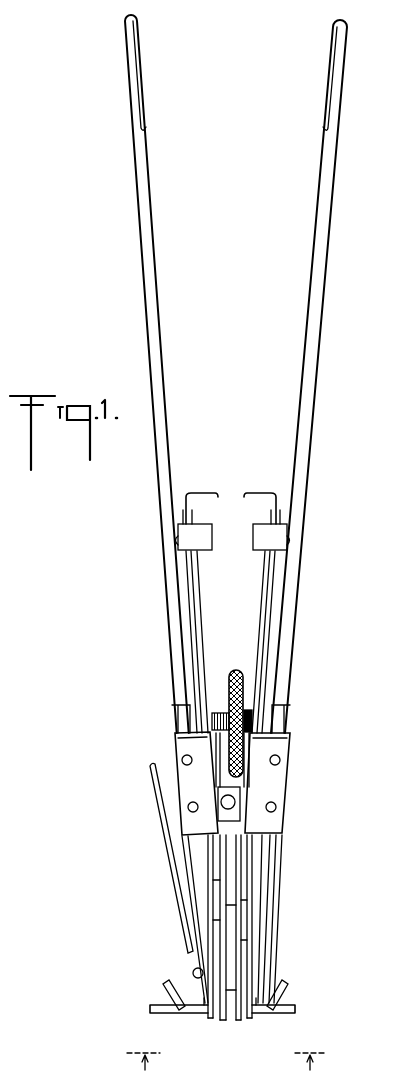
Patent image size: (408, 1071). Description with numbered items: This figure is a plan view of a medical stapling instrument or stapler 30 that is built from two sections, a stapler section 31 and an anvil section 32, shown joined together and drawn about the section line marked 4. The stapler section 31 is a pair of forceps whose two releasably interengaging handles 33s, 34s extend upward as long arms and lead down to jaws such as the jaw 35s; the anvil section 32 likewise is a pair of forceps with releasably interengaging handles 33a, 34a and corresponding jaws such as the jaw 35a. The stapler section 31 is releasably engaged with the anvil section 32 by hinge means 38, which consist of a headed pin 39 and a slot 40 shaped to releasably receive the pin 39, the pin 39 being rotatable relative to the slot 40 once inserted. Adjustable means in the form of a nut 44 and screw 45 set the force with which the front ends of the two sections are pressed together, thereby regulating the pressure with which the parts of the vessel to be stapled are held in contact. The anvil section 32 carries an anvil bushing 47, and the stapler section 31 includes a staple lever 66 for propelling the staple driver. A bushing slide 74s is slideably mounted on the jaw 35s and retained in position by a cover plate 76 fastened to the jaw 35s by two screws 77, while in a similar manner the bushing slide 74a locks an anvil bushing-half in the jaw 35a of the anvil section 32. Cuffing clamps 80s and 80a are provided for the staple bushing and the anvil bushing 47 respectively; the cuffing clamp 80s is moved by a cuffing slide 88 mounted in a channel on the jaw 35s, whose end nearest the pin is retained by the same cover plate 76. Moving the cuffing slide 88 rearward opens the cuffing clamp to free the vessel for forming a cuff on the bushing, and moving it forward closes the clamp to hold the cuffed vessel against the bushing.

The medical stapling instrument 30 is at (150, 653).
The handle 33s is at (139, 72).
The handle 34s is at (140, 83).
The handle 33a is at (341, 62).
The handle 34a is at (340, 83).
The cuffing slide 88 is at (184, 497).
The nut 44 is at (236, 668).
The screw 45 is at (218, 712).
The hinge means 38 is at (245, 782).
The bushing slide 74s is at (180, 714).
The bushing slide 74a is at (286, 717).
The stapler section 31 is at (176, 736).
The anvil section 32 is at (291, 734).
The cover plate 76 is at (181, 760).
The screws 77 is at (187, 806).
The headed pin 39 is at (236, 803).
The slot 40 is at (242, 821).
The anvil bushing 47 is at (238, 1024).
The staple lever 66 is at (176, 887).
The cuffing clamp 80s is at (215, 840).
The cuffing clamp 80a is at (244, 856).
The jaw 35s is at (182, 984).
The jaw 35a is at (266, 978).
The section line 4- 4 is at (226, 1050).